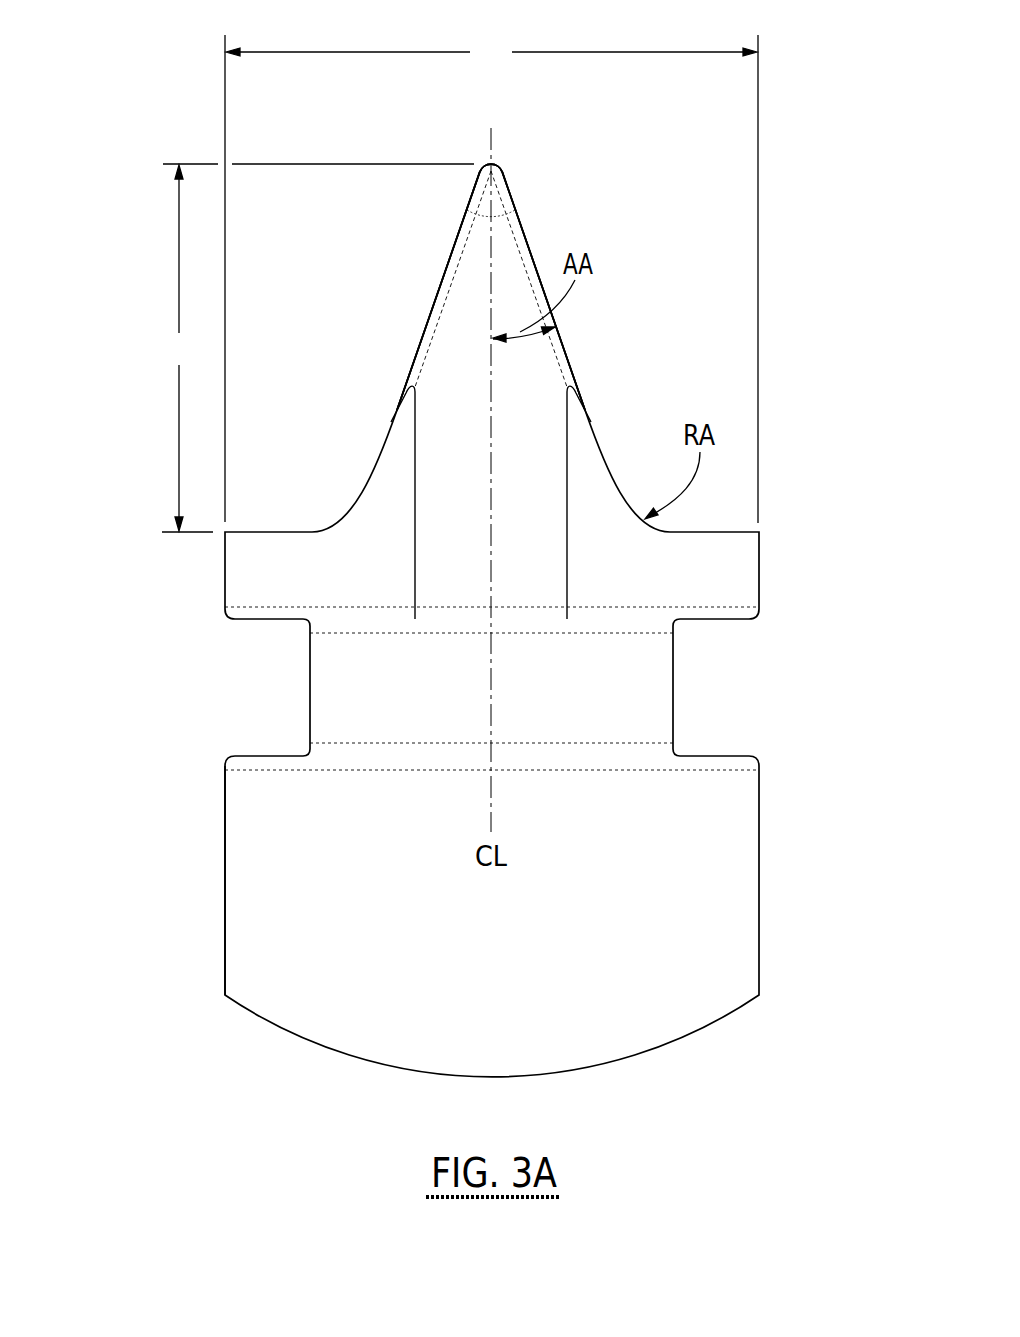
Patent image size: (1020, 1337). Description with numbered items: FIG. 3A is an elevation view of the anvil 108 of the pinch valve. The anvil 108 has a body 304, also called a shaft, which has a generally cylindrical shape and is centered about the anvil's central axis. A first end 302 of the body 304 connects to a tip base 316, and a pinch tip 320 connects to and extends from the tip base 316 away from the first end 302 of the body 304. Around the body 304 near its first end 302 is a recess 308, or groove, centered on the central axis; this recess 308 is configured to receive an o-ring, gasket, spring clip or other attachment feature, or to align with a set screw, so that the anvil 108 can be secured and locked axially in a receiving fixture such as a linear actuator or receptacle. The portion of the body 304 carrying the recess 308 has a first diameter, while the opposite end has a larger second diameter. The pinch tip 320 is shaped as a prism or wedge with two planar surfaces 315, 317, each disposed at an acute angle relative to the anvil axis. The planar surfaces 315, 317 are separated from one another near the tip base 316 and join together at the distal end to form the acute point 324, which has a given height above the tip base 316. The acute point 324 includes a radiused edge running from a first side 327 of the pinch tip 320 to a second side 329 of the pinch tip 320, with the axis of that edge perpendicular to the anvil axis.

The anvil 108 is at (818, 137).
The first end 302 is at (154, 792).
The body 304 is at (224, 880).
The recess 308 is at (309, 685).
The planar surface 315 is at (418, 345).
The tip base 316 is at (761, 567).
The planar surface 317 is at (565, 356).
The pinch tip 320 is at (424, 314).
The acute point 324 is at (500, 159).
The first side 327 is at (123, 234).
The second side 329 is at (798, 251).